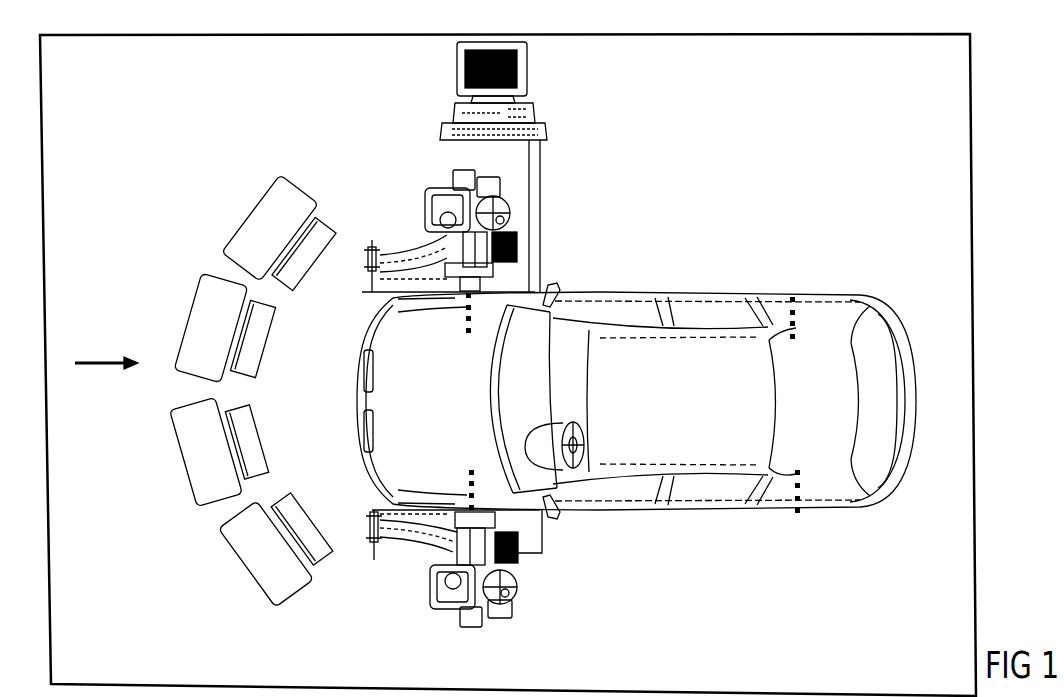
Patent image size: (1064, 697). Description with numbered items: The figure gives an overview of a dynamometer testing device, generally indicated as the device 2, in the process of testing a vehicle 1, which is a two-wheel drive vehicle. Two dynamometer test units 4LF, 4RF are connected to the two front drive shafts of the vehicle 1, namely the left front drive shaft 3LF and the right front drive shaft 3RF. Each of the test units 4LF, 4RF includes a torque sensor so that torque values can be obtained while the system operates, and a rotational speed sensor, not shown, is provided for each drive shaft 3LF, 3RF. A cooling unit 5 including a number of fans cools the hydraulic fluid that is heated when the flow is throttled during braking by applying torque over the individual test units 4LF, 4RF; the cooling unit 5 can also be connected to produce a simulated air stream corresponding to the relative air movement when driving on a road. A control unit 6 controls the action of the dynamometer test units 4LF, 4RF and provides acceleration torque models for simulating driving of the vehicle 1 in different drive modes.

The vehicle 1 is at (670, 403).
The device 2 is at (105, 350).
The right front drive shaft 3RF is at (465, 314).
The left front drive shaft 3LF is at (469, 472).
The right front dynamometer test unit 4RF is at (610, 249).
The left front dynamometer test unit 4LF is at (595, 598).
The cooling unit 5 is at (300, 416).
The control unit 6 is at (525, 101).